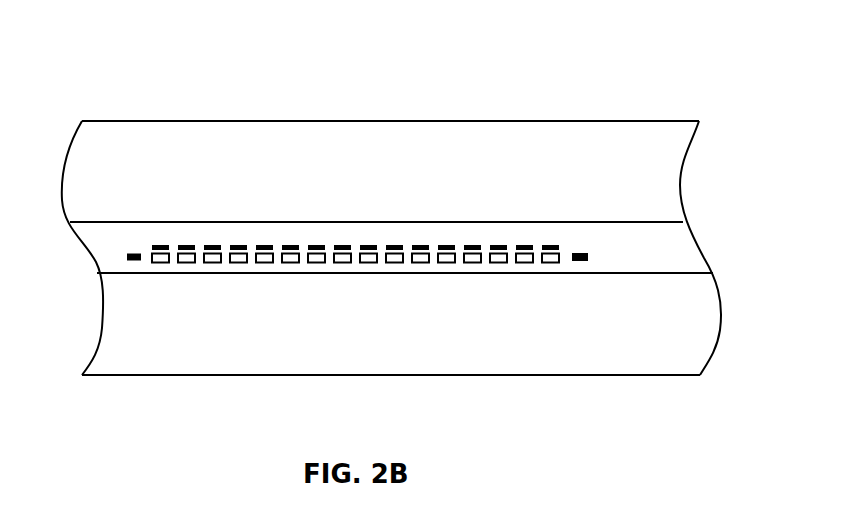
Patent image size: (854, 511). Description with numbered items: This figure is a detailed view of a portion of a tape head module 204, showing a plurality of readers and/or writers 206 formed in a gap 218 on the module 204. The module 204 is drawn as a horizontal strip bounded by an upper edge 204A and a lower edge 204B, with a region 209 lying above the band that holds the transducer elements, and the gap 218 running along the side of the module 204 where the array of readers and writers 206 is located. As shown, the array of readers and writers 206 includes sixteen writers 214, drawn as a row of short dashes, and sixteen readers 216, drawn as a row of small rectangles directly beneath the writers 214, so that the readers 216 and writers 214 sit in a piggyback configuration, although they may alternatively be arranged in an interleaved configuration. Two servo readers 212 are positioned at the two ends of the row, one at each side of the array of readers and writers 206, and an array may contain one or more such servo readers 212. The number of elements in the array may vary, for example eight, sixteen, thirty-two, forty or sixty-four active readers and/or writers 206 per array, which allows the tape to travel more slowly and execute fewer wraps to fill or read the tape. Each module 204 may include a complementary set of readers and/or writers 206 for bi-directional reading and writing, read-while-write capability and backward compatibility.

The module 204 is at (95, 98).
The top surface of strip 204A is at (183, 121).
The bottom surface of strip 204B is at (237, 375).
The readers and/or writers 206 is at (608, 246).
The upper layer region 209 is at (316, 188).
The servo readers 212 is at (127, 257).
The writers 214 is at (503, 245).
The readers 216 is at (473, 263).
The gap 218 is at (700, 247).